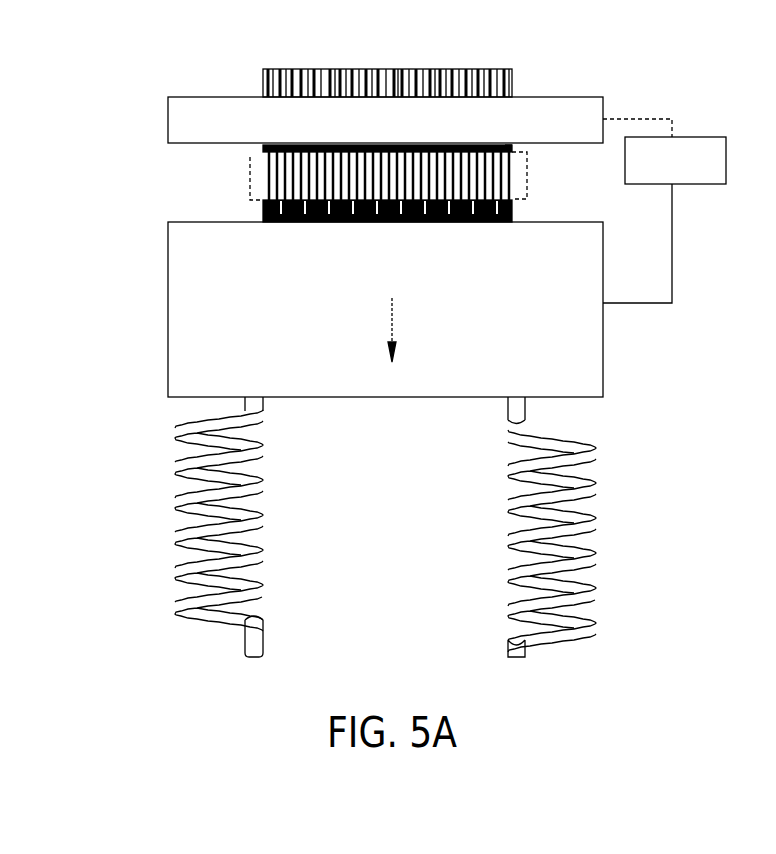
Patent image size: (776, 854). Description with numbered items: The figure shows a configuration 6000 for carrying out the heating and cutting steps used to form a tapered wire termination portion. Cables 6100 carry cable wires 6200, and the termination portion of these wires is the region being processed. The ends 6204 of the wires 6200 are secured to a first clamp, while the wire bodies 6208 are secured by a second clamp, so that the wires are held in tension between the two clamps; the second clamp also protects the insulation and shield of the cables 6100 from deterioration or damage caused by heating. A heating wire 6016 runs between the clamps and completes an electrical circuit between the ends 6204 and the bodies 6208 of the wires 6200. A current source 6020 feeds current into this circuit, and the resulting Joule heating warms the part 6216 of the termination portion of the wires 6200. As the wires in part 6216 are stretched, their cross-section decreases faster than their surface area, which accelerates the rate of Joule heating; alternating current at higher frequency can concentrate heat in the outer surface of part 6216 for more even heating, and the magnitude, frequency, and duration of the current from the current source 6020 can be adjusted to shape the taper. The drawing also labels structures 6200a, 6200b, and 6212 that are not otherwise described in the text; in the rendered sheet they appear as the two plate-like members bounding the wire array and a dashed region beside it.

The configuration 6000 is at (392, 492).
The cables 6100 is at (263, 83).
The cable wires 6200 is at (267, 150).
The lower plate 6200a is at (604, 366).
The upper plate 6200b is at (592, 97).
The ends 6204 is at (513, 215).
The wire bodies 6208 is at (508, 150).
The thermoelectric elements 6212 is at (513, 180).
The part of the termination portion 6216 is at (248, 197).
The heating wire 6016 is at (672, 250).
The current source 6020 is at (701, 136).